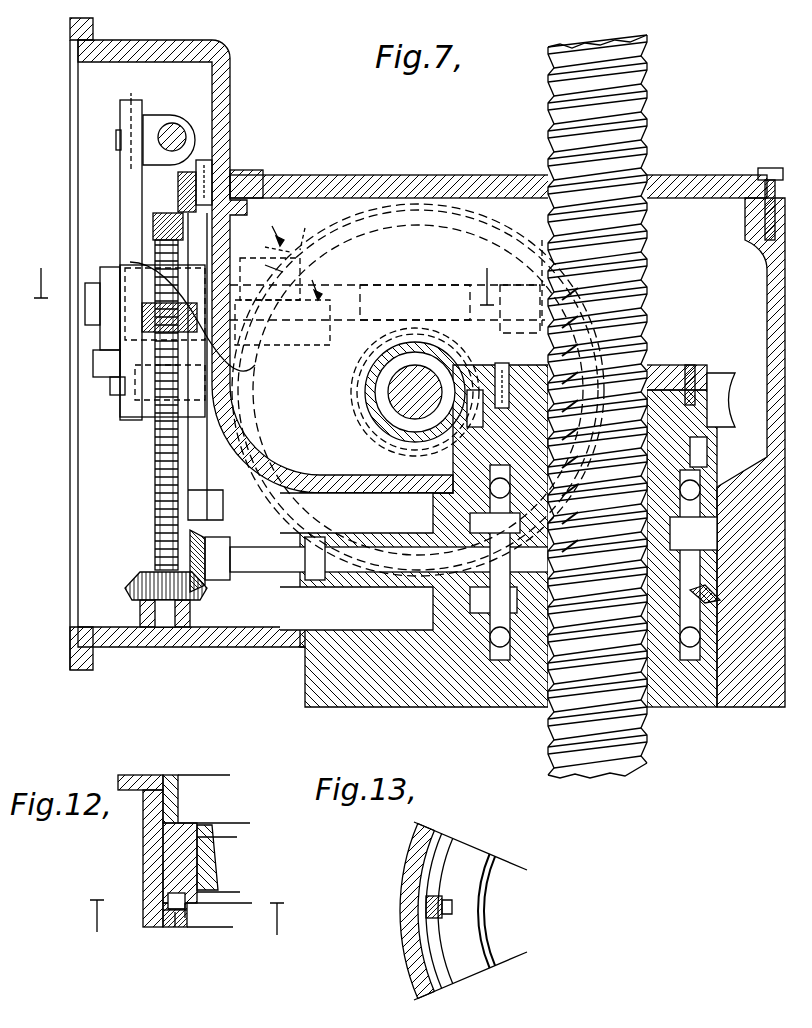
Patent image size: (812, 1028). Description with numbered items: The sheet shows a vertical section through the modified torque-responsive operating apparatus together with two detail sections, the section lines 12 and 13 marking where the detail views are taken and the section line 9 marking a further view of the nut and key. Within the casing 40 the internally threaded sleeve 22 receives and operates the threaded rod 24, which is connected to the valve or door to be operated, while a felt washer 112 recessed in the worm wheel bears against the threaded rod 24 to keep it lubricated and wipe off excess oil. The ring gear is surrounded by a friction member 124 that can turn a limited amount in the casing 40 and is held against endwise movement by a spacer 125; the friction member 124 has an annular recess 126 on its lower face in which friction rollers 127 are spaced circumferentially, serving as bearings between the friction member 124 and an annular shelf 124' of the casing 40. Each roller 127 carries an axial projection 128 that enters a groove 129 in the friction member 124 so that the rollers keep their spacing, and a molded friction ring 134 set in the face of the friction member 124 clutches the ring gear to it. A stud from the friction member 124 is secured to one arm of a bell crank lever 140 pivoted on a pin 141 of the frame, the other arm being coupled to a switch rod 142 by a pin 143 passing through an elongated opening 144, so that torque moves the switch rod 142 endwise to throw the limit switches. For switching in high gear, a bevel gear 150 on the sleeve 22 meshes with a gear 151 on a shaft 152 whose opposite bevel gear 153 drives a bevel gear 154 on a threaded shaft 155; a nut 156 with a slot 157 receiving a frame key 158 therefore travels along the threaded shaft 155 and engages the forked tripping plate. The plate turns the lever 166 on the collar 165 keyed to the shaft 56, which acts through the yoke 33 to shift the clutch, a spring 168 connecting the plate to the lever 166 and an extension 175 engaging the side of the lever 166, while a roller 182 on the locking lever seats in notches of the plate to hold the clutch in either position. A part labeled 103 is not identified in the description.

In FIG. 7, the section line 9— 9 is at (255, 283).
In FIG. 7, the section line 12— 12 is at (302, 253).
In FIG. 12, the section line 13— 13 is at (188, 919).
In FIG. 7, the internally threaded sleeve 22 is at (705, 533).
In FIG. 7, the threaded rod 24 is at (645, 760).
In FIG. 7, the yoke member 33 is at (375, 392).
In FIG. 12, the casing 40 is at (153, 925).
In FIG. 13, the casing 40 is at (405, 860).
In FIG. 7, the shaft 56 is at (358, 296).
In FIG. 7, the spring 103 is at (200, 178).
In FIG. 7, the felt washer 112 is at (672, 365).
In FIG. 7, the friction member 124 is at (498, 173).
In FIG. 12, the friction member 124 is at (174, 875).
In FIG. 12, the annular shelf 124' is at (196, 941).
In FIG. 13, the annular shelf 124' is at (399, 912).
In FIG. 12, the spacer 125 is at (185, 792).
In FIG. 7, the annular recess 126 is at (418, 390).
In FIG. 12, the annular recess 126 is at (160, 857).
In FIG. 13, the annular recess 126 is at (432, 985).
In FIG. 7, the friction rollers 127 is at (316, 512).
In FIG. 12, the friction rollers 127 is at (192, 912).
In FIG. 13, the friction rollers 127 is at (452, 907).
In FIG. 7, the axial projection 128 is at (261, 246).
In FIG. 12, the axial projection 128 is at (165, 900).
In FIG. 13, the axial projection 128 is at (430, 906).
In FIG. 7, the groove 129 is at (316, 228).
In FIG. 12, the groove 129 is at (172, 920).
In FIG. 13, the groove 129 is at (425, 930).
In FIG. 12, the friction ring 134 is at (205, 840).
In FIG. 7, the bell crank lever 140 is at (120, 183).
In FIG. 7, the pin 141 is at (115, 408).
In FIG. 7, the switch rod 142 is at (176, 122).
In FIG. 7, the pin 143 is at (117, 138).
In FIG. 7, the elongated opening 144 is at (130, 86).
In FIG. 7, the bevel gear 150 is at (720, 595).
In FIG. 7, the gear 151 is at (510, 580).
In FIG. 7, the shaft 152 is at (265, 565).
In FIG. 7, the bevel gear 153 is at (208, 592).
In FIG. 7, the bevel gear 154 is at (140, 585).
In FIG. 7, the threaded shaft 155 is at (155, 530).
In FIG. 7, the nut 156 is at (200, 330).
In FIG. 7, the slot 157 is at (225, 335).
In FIG. 7, the key 158 is at (192, 450).
In FIG. 7, the collar 165 is at (85, 318).
In FIG. 7, the lever 166 is at (100, 350).
In FIG. 7, the spring 168 is at (142, 310).
In FIG. 7, the extension 175 is at (100, 377).
In FIG. 7, the roller 182 is at (153, 228).